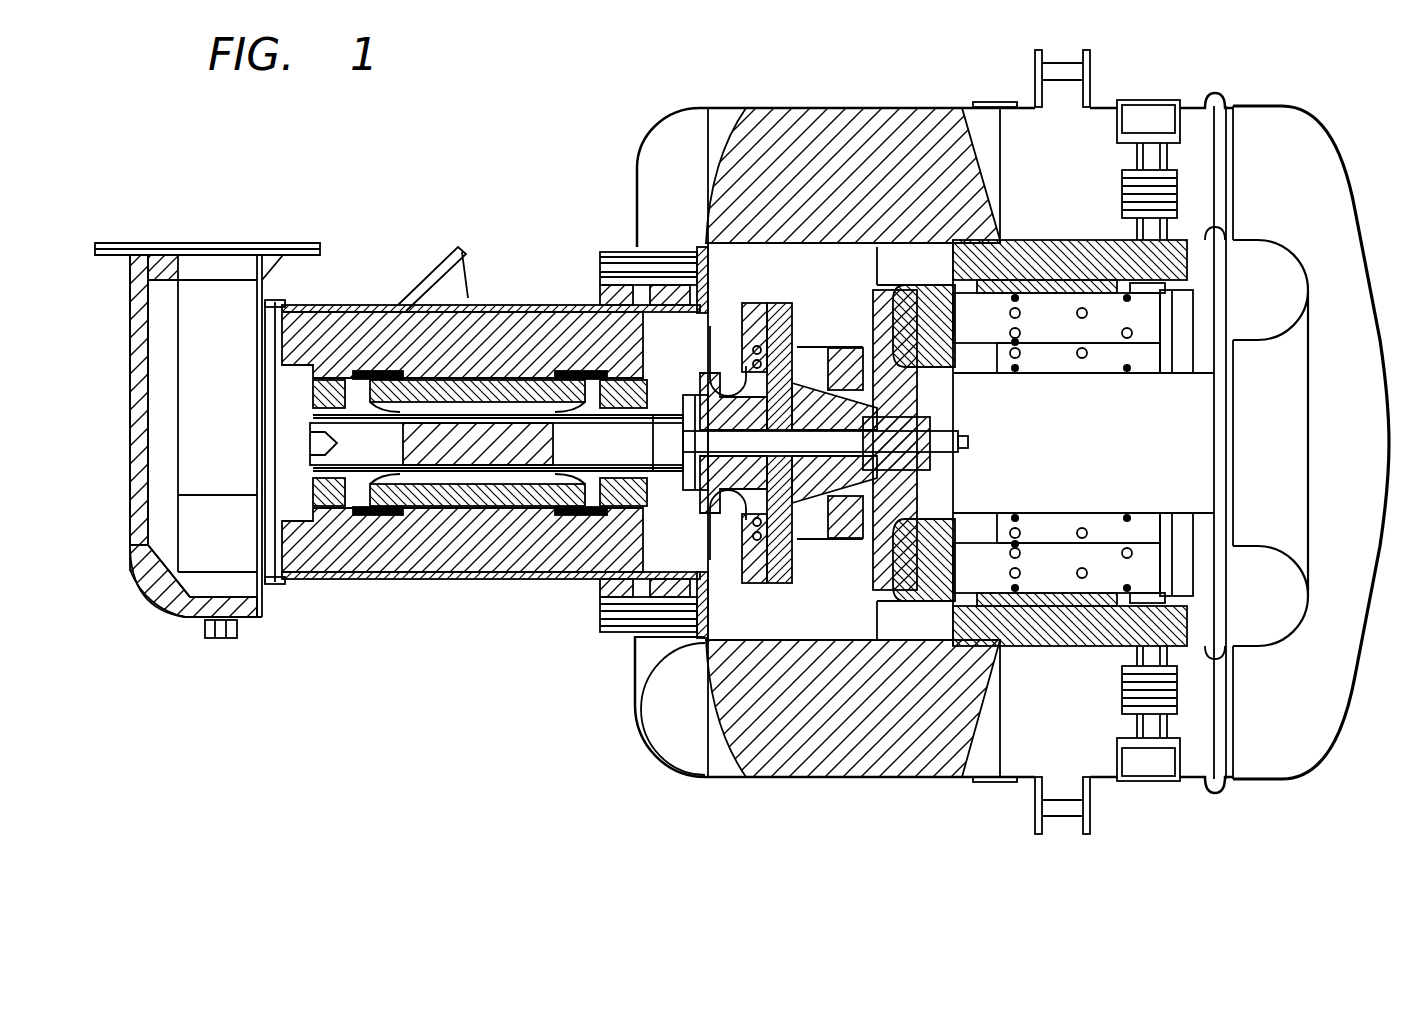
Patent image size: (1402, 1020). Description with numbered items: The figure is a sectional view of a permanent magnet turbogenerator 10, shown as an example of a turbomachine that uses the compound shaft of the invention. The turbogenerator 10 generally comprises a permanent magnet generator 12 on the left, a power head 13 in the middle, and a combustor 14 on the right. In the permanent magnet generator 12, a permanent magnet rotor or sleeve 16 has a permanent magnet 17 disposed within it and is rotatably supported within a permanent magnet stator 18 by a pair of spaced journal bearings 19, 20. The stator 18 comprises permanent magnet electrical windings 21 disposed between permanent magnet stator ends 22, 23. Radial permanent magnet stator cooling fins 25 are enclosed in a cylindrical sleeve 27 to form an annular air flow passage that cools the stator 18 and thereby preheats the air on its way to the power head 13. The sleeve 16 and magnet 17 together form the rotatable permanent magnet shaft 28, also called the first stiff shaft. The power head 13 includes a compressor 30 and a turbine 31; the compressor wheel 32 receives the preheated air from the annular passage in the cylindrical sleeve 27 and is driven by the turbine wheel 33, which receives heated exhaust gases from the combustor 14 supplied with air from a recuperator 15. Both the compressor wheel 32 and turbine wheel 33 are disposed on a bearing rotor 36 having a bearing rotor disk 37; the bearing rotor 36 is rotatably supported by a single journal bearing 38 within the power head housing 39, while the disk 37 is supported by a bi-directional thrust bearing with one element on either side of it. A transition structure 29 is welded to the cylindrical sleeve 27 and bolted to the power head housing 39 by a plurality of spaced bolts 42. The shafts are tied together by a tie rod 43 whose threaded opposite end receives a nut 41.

The permanent magnet turbogenerator 10 is at (468, 160).
The permanent magnet generator 12 is at (398, 600).
The power head 13 is at (793, 287).
The combustor 14 is at (1143, 375).
The recuperator 15 is at (745, 95).
The permanent magnet rotor or sleeve 16 is at (660, 468).
The permanent magnet 17 is at (560, 427).
The permanent magnet stator 18 is at (482, 525).
The journal bearing 19 is at (337, 506).
The journal bearing 20 is at (628, 475).
The permanent magnet electrical windings 21 is at (522, 305).
The permanent magnet stator end 22 is at (337, 365).
The permanent magnet stator end 23 is at (615, 380).
The radial permanent magnet stator cooling fins 25 is at (443, 580).
The cylindrical sleeve 27 is at (498, 300).
The permanent magnet shaft 28 is at (662, 408).
The transition structure 29 is at (623, 280).
The compressor 30 is at (755, 595).
The turbine 31 is at (850, 600).
The compressor wheel 32 is at (700, 250).
The turbine wheel 33 is at (940, 390).
The bearing rotor 36 is at (890, 530).
The bearing rotor disk 37 is at (815, 340).
The journal bearing 38 is at (818, 520).
The power head housing 39 is at (868, 420).
The nut 41 is at (930, 470).
The bolts 42 is at (797, 540).
The tie rod 43 is at (970, 443).